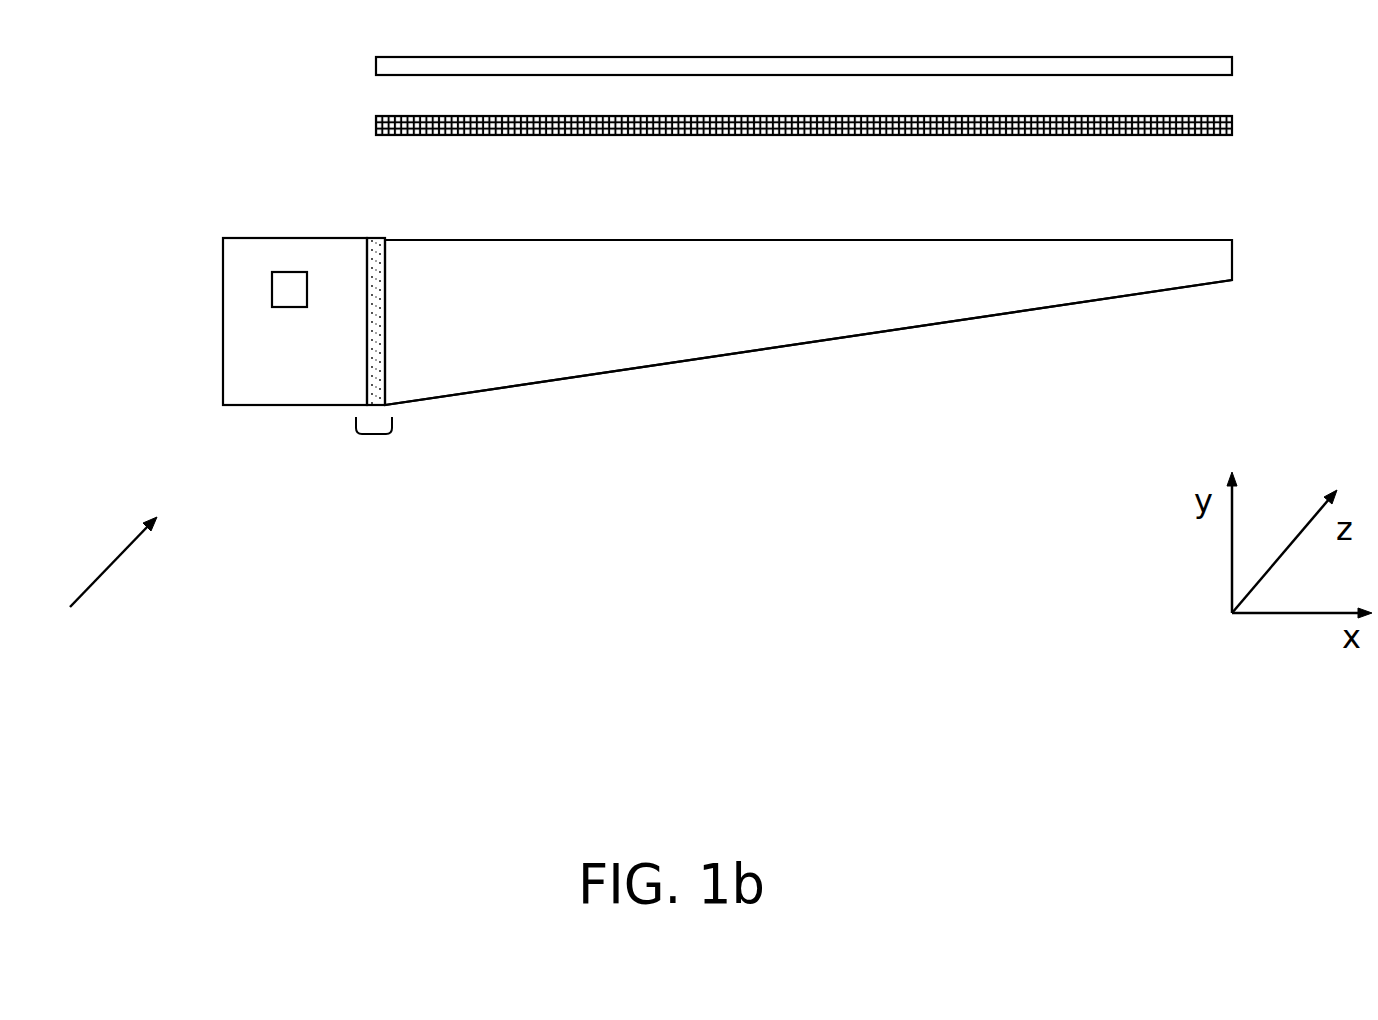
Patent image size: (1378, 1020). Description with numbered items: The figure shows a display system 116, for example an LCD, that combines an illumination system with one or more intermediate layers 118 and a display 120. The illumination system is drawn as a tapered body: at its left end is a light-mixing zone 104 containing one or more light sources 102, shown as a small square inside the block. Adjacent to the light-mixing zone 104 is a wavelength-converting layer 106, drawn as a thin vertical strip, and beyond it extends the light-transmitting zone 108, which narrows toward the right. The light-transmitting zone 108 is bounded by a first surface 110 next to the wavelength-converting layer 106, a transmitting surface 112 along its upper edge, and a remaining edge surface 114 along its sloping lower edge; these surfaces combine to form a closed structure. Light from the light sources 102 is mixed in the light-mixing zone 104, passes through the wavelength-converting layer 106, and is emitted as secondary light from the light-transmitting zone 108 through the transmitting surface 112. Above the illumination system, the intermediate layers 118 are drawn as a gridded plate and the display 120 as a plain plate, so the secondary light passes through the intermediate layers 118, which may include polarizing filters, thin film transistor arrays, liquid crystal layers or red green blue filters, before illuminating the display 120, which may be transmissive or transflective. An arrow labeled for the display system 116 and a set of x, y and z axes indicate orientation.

The light source 102 is at (289, 272).
The light-mixing zone 104 is at (318, 393).
The wavelength-converting layer 106 is at (373, 434).
The light-transmitting zone 108 is at (713, 317).
The first surface 110 is at (385, 323).
The transmitting surface 112 is at (596, 240).
The remaining edge surface 114 is at (742, 353).
The display system 116 is at (93, 586).
The intermediate layers 118 is at (1232, 125).
The display 120 is at (1232, 66).